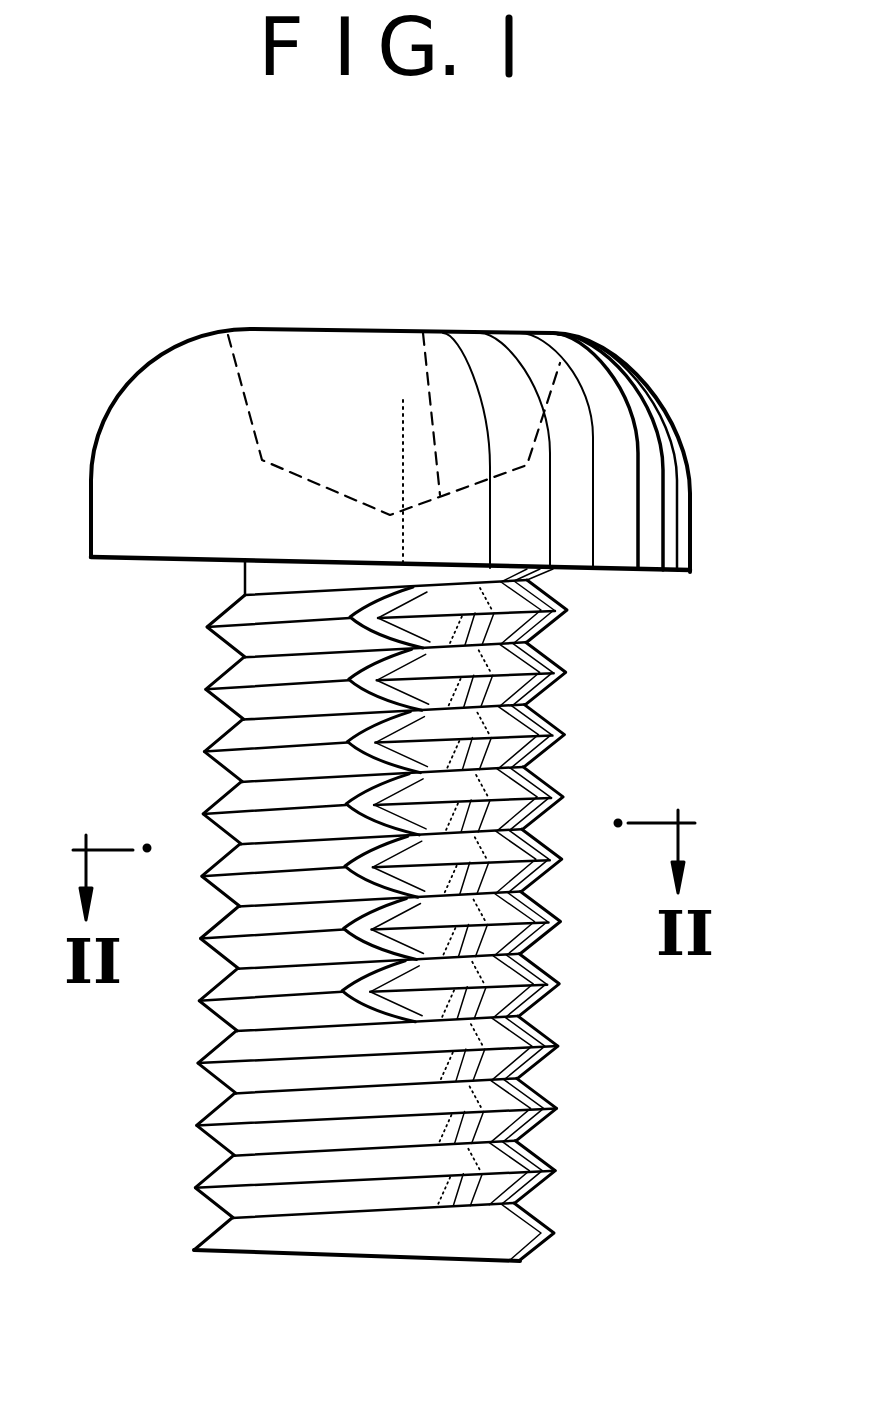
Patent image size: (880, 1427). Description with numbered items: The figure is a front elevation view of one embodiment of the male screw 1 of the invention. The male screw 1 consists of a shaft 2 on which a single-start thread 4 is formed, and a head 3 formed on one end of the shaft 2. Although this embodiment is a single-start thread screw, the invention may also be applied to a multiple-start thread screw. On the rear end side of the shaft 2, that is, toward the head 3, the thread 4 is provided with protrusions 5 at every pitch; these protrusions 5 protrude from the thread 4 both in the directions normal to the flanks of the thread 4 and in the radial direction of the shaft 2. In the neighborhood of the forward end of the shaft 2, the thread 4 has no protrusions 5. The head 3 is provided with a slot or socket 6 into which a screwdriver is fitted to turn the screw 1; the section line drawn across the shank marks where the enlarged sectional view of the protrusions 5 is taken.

The male screw 1 is at (130, 342).
The shaft 2 is at (553, 1112).
The head 3 is at (647, 390).
The single-start thread 4 is at (210, 689).
The protrusions 5 is at (357, 992).
The slot or socket 6 is at (423, 333).